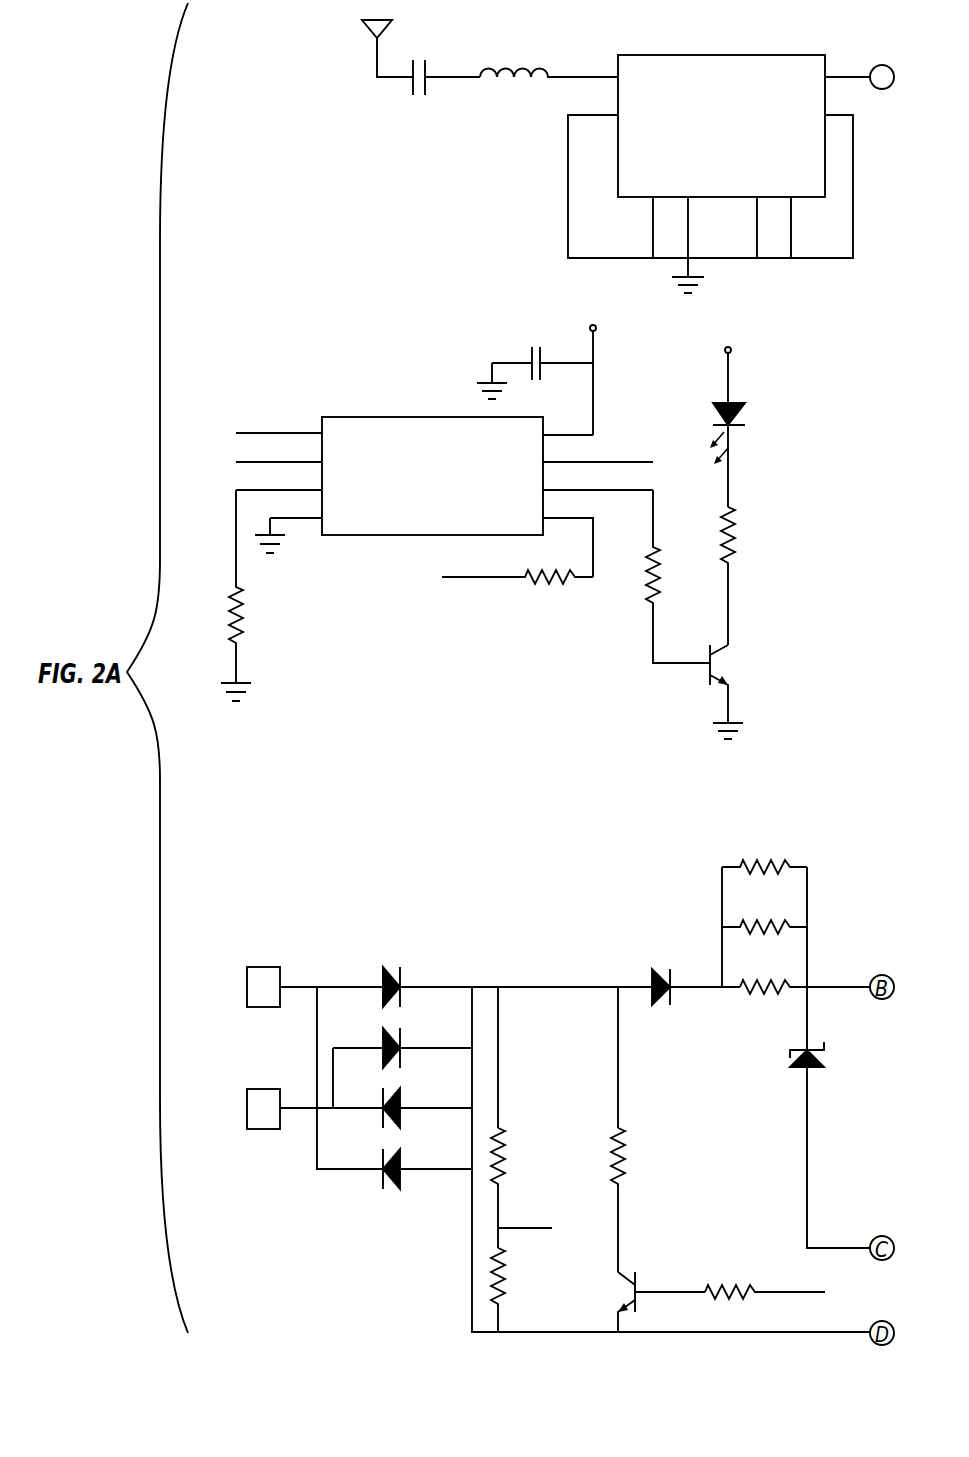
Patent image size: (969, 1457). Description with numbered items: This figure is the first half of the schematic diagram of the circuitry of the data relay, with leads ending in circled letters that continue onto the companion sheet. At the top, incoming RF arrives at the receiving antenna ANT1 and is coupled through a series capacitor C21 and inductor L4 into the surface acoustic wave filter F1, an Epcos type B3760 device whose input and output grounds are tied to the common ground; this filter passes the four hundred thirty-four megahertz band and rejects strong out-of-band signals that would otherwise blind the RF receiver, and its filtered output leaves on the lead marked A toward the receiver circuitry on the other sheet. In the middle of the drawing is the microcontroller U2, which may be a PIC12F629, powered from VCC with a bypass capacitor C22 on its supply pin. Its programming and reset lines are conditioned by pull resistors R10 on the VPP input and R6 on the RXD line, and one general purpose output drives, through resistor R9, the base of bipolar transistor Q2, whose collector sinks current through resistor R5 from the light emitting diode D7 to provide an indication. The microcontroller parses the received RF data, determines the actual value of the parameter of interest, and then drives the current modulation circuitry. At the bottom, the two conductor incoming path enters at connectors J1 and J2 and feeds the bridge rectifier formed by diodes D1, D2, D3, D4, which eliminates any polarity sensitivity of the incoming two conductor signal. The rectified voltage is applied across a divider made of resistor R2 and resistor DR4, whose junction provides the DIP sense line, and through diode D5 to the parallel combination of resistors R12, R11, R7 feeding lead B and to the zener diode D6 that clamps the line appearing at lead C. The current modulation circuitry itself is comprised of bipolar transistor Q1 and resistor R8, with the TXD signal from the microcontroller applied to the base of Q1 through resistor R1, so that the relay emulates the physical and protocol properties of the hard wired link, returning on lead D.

The antenna ANT1 is at (347, 39).
The capacitor 220pF C21 is at (436, 77).
The inductor 33nH L4 is at (540, 54).
The surface acoustic wave filter F1 is at (731, 146).
The microcontroller U2 is at (444, 483).
The capacitor 0.1uF C22 is at (544, 365).
The resistor 10K R10 is at (252, 595).
The resistor 10K R6 is at (517, 577).
The resistor 10K R9 is at (678, 576).
The LED D7 is at (747, 412).
The resistor 1K R5 is at (746, 575).
The transistor MMBT3904 Q2 is at (796, 688).
The connector V_INA J1 is at (285, 972).
The connector V_INB J2 is at (285, 1095).
The diode D1 is at (502, 975).
The diode D2 is at (412, 1036).
The diode D3 is at (412, 1096).
The diode D4 is at (412, 1157).
The resistor 4.7K 1/4W R2 is at (545, 1173).
The resistor 1K DR4 is at (519, 1288).
The resistor R8 is at (664, 1185).
The bipolar transistor Q1 is at (625, 1298).
The resistor 1K R1 is at (765, 1273).
The diode DL4007 D5 is at (696, 959).
The resistor 2K 1/4W R12 is at (764, 842).
The resistor 2K 1/4W R11 is at (764, 902).
The resistor 2K 1/4W R7 is at (805, 962).
The zener diode DL4739 9.1V 1W D6 is at (772, 1055).